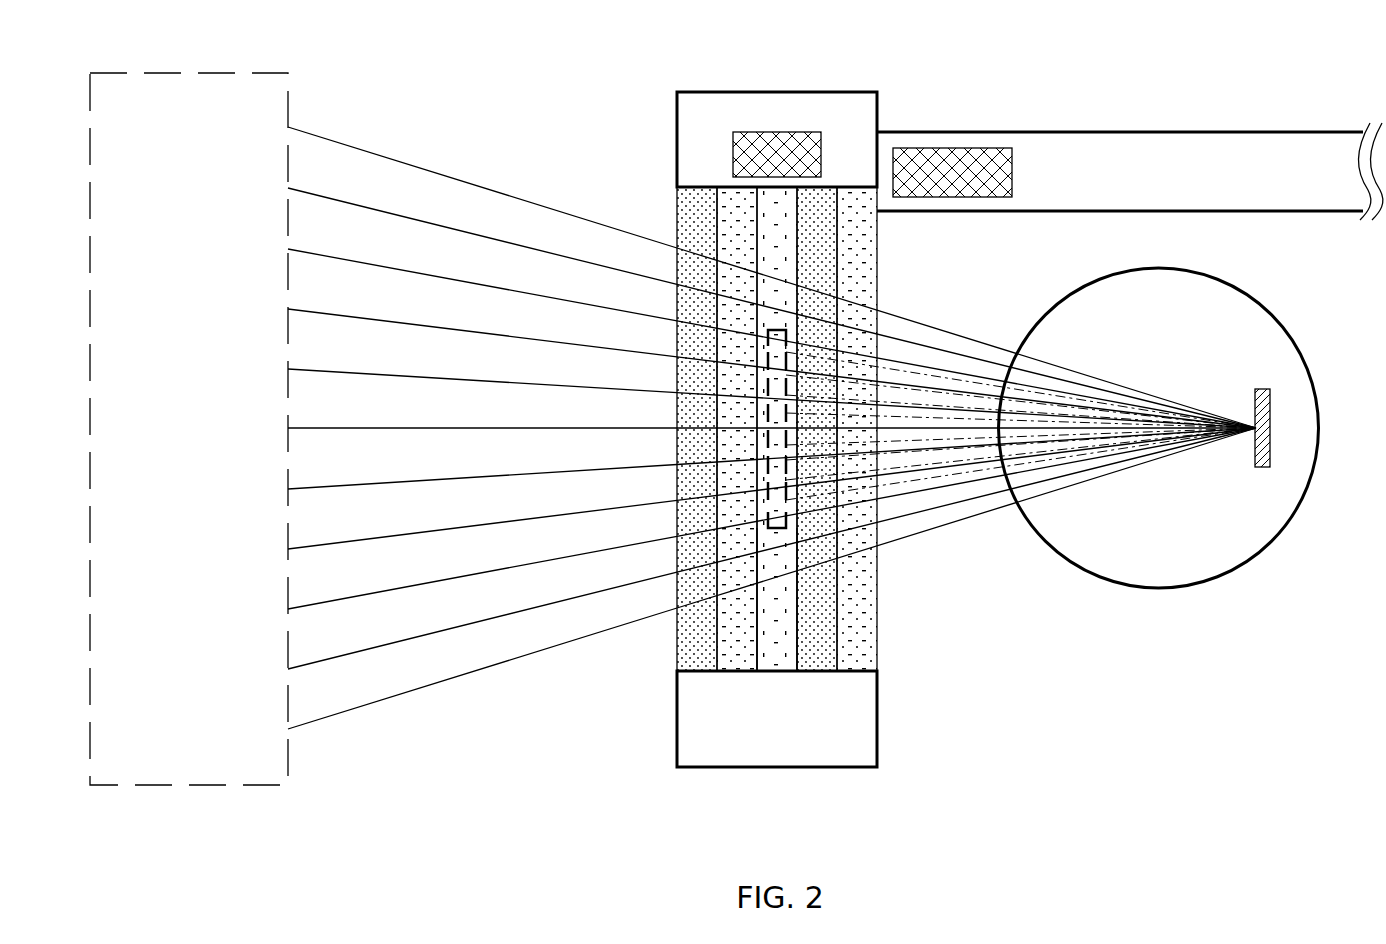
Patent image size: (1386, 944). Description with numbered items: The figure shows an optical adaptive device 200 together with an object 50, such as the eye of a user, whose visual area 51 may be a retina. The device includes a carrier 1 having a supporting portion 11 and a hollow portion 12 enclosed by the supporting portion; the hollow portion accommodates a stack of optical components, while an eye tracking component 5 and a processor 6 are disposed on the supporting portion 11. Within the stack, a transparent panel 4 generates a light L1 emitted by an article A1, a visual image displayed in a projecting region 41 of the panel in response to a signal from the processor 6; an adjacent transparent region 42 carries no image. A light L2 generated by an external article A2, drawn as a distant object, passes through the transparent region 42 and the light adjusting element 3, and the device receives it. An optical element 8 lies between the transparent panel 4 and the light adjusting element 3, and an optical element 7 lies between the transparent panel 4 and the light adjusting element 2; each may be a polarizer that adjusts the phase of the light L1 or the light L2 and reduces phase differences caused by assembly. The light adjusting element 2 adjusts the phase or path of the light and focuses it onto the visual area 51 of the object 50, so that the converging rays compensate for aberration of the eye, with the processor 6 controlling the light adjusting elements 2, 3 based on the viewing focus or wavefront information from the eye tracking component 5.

The carrier 1 is at (1030, 383).
The light adjusting element 2 is at (857, 658).
The light adjusting element 3 is at (697, 658).
The transparent panel 4 is at (777, 658).
The eye tracking component 5 is at (745, 160).
The processor 6 is at (960, 162).
The optical element 7 is at (817, 658).
The optical element 8 is at (737, 658).
The supporting portion 11 is at (845, 100).
The hollow portion 12 is at (892, 235).
The projecting region 41 is at (767, 446).
The transparent region 42 is at (778, 624).
The object 50 is at (1177, 603).
The visual area 51 is at (1265, 455).
The optical adaptive device 200 is at (688, 450).
The article A1 is at (642, 371).
The article A2 is at (213, 786).
The light L1 is at (910, 487).
The light L2 is at (526, 660).